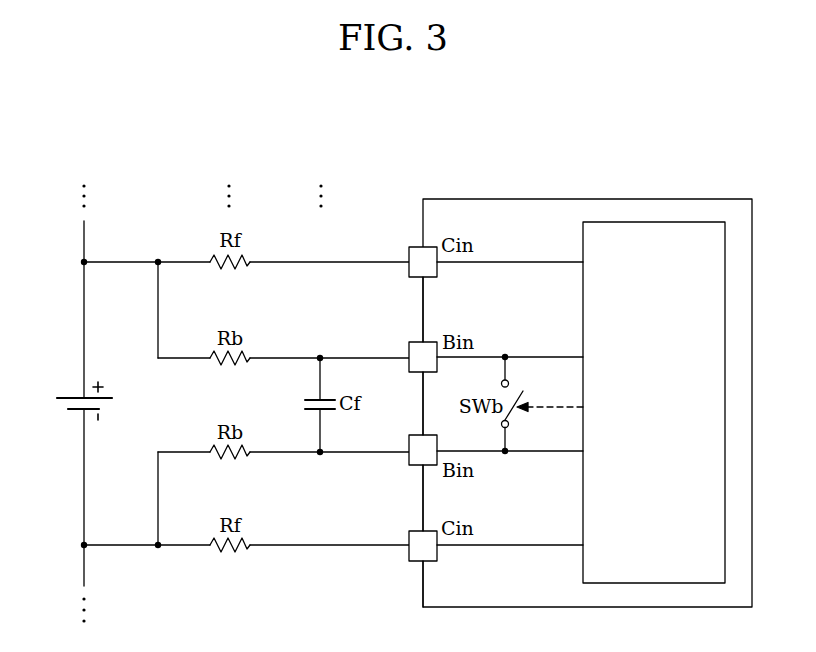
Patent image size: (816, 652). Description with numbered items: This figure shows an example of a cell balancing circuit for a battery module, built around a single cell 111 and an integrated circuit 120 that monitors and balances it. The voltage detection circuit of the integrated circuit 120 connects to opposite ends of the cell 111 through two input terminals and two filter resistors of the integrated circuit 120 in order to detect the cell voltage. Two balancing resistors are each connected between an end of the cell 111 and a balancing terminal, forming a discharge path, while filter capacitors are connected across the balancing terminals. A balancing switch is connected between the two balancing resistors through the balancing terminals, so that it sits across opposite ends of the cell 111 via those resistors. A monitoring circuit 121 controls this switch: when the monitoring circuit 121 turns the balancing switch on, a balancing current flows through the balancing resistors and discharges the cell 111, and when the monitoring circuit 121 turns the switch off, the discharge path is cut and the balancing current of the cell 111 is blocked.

The cell 111 is at (73, 396).
The integrated circuit 120 is at (700, 199).
The monitoring circuit 121 is at (653, 222).